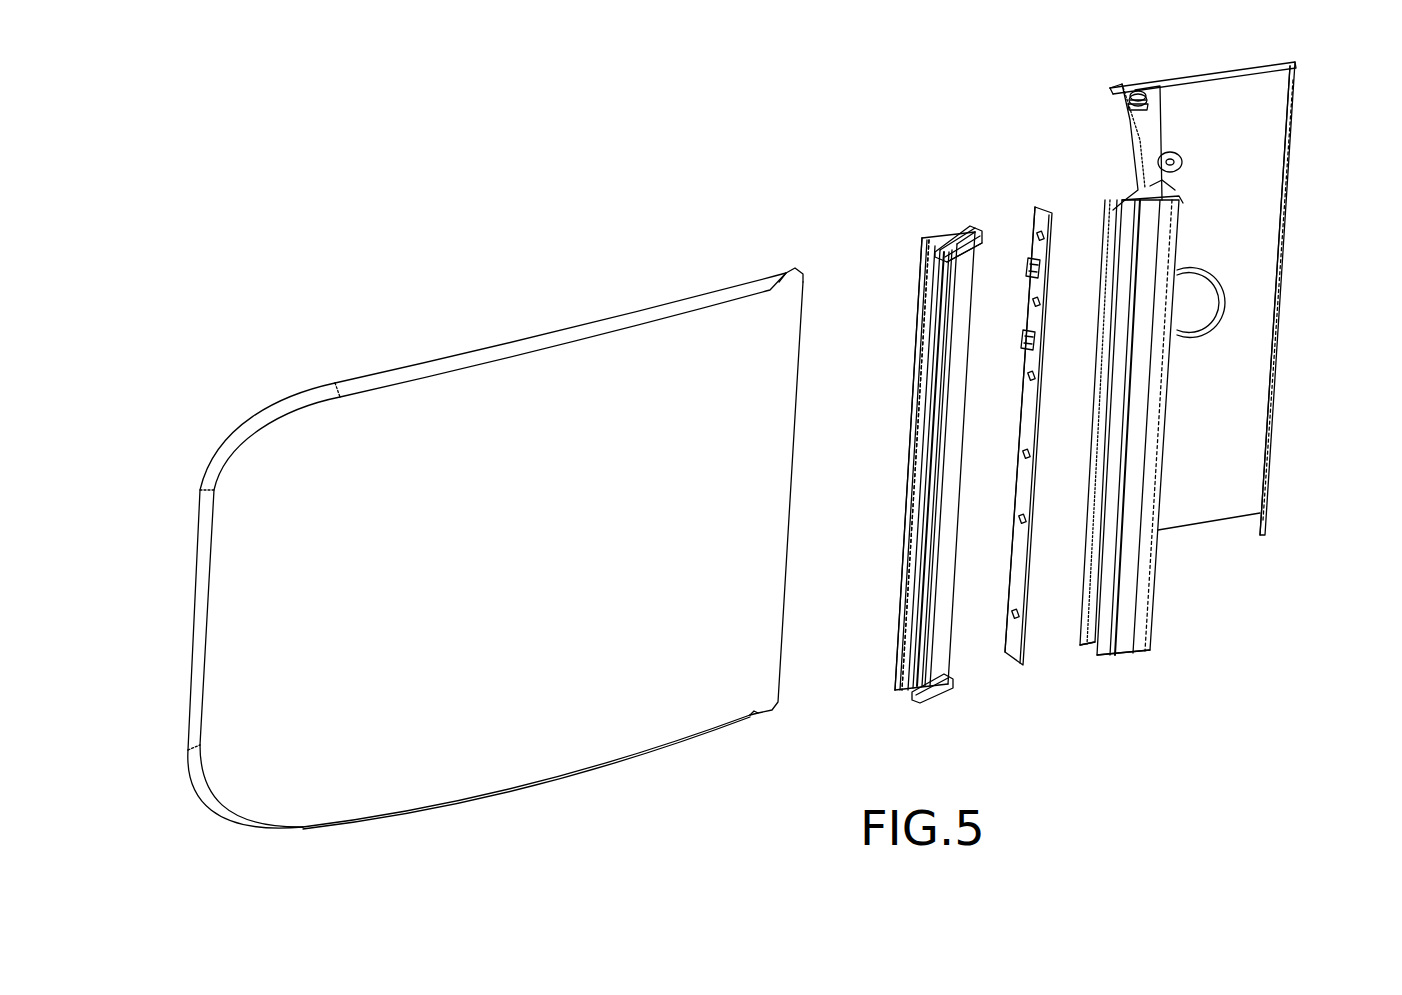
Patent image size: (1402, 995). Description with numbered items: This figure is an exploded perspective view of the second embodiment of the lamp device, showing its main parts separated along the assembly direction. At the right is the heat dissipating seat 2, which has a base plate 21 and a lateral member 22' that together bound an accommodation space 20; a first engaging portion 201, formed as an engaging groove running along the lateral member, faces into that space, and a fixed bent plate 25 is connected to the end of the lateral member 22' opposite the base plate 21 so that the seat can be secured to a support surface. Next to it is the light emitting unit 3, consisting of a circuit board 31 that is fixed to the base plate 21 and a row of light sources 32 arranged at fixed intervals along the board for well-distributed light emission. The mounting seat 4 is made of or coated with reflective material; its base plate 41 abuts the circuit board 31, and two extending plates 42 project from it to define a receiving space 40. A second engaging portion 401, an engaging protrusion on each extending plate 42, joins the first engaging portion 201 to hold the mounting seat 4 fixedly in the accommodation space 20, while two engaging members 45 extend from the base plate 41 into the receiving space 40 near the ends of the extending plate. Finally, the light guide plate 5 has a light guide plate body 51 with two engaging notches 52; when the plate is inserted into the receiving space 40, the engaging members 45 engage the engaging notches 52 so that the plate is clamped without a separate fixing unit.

The heat dissipating seat 2 is at (1189, 414).
The accommodation space 20 is at (1109, 481).
The first engaging portion 201 is at (1140, 200).
The base plate 21 is at (1180, 184).
The lateral member 22' is at (1126, 704).
The fixed bent plate 25 is at (1255, 418).
The light emitting unit 3 is at (1022, 491).
The circuit board 31 is at (1017, 545).
The light source 32 is at (1025, 572).
The mounting seat 4 is at (929, 400).
The receiving space 40 is at (912, 330).
The second engaging portion 401 is at (930, 230).
The base plate 41 is at (985, 240).
The extending plate 42 is at (940, 240).
The engaging member 45 is at (955, 235).
The light guide plate 5 is at (506, 506).
The light guide plate body 51 is at (557, 368).
The engaging notch 52 is at (781, 280).